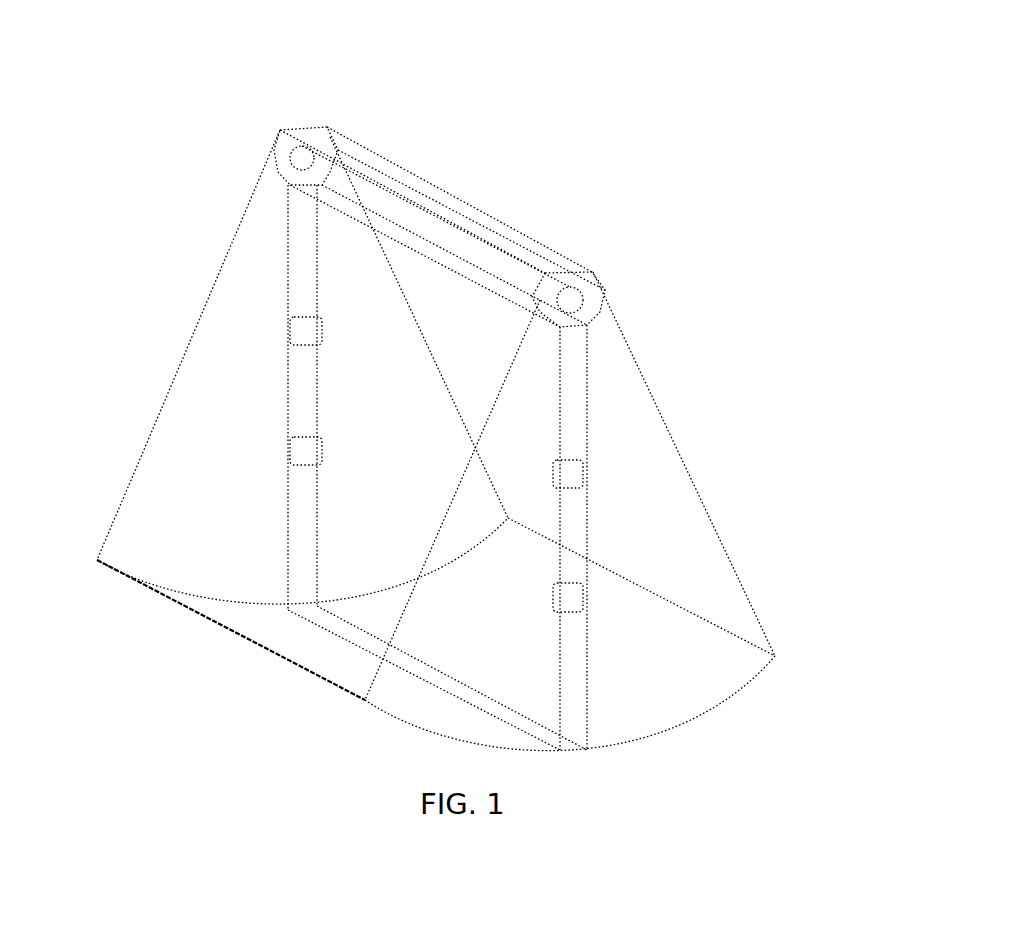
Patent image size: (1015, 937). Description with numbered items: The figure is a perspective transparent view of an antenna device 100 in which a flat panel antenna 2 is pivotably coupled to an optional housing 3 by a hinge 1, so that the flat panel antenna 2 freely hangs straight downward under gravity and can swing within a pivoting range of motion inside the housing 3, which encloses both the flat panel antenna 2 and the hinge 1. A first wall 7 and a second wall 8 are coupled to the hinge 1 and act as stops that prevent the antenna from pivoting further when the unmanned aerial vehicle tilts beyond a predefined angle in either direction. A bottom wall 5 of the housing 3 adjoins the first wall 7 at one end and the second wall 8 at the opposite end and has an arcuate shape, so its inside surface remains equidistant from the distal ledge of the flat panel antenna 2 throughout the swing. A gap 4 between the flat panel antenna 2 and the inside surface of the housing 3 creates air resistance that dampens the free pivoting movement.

The antenna device 100 is at (885, 78).
The hinge 1 is at (581, 292).
The flat panel antenna 2 is at (288, 265).
The housing 3 is at (705, 454).
The gap 4 is at (575, 451).
The bottom wall 5 is at (769, 690).
The first wall 7 is at (203, 444).
The second wall 8 is at (680, 553).